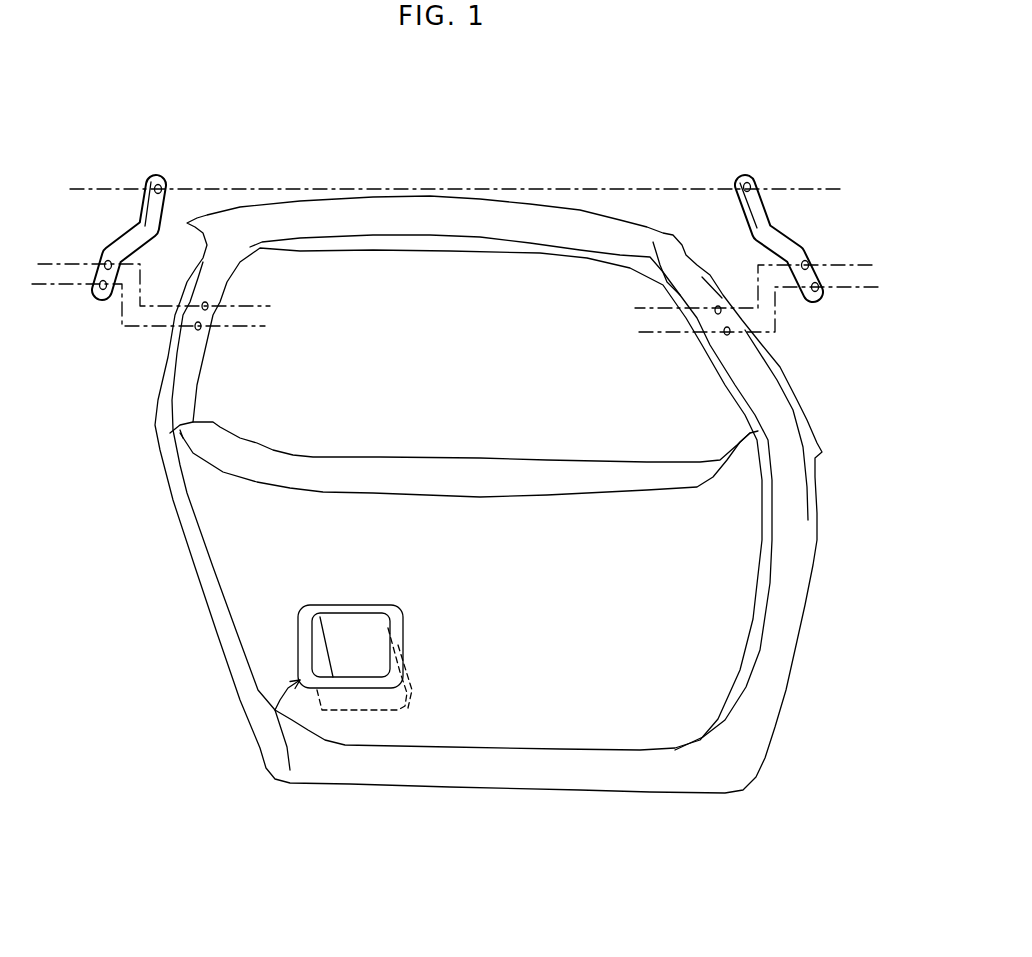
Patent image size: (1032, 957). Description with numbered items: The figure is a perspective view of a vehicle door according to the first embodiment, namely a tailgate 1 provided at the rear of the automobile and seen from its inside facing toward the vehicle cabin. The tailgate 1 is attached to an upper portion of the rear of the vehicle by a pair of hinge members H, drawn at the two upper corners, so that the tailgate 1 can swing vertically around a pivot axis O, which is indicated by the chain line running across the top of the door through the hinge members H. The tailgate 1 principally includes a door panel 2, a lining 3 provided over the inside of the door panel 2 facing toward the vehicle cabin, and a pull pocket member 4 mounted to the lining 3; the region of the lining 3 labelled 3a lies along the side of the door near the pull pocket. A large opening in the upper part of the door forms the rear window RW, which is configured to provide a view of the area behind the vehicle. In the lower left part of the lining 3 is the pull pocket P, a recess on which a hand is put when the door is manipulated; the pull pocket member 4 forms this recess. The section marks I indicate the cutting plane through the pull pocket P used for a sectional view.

The tailgate 1 is at (280, 126).
The door panel 2 is at (660, 773).
The lining 3 is at (475, 723).
The side portion of inner panel 3a is at (206, 516).
The pull pocket member 4 is at (287, 753).
The pull pocket P is at (343, 637).
The hinge members H is at (447, 237).
The pivot axis O is at (455, 136).
The rear window RW is at (572, 219).
The section line I- I is at (332, 573).